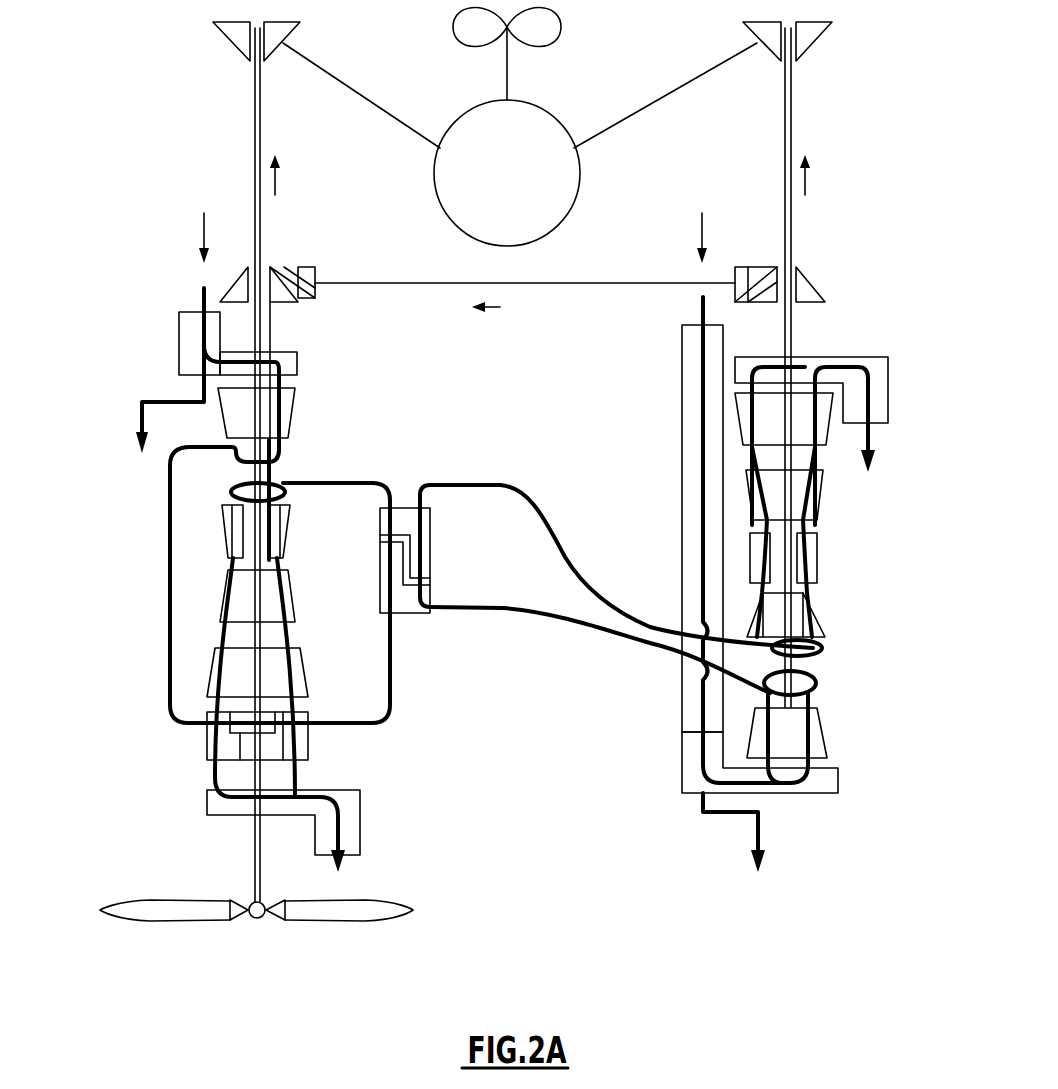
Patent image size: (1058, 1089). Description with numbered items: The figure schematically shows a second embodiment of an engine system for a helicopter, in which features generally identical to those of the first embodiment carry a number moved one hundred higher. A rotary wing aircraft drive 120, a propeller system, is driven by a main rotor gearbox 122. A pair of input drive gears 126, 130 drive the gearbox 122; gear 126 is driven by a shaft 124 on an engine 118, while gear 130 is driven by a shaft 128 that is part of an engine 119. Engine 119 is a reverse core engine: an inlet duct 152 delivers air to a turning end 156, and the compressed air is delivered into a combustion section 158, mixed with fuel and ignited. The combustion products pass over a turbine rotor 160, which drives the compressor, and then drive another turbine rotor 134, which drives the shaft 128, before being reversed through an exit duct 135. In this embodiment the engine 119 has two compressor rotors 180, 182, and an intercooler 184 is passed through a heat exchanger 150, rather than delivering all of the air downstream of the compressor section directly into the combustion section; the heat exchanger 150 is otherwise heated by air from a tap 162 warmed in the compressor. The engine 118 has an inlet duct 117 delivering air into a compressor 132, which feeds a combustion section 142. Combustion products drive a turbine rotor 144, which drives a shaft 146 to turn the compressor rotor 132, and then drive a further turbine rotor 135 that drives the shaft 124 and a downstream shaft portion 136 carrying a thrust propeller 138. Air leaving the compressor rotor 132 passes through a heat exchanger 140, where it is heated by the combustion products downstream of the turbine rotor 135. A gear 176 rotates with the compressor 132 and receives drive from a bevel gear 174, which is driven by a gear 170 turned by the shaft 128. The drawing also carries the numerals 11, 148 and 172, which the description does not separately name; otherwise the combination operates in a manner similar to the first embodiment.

The recuperator/heat exchanger 11 is at (820, 650).
The inlet duct 117 is at (187, 348).
The engine 118 is at (113, 312).
The engine 119 is at (884, 226).
The rotary wing aircraft drive 120 is at (468, 26).
The main rotor gearbox 122 is at (548, 112).
The shaft 124 is at (255, 82).
The input drive gear 126 is at (228, 40).
The shaft 128 is at (792, 125).
The input drive gear 130 is at (806, 36).
The compressor 132 is at (233, 412).
The turbine rotor 134 is at (830, 426).
The turbine rotor 135 is at (298, 670).
The downstream shaft portion 136 is at (254, 832).
The thrust propeller 138 is at (143, 912).
The heat exchanger 140 is at (207, 742).
The combustion section 142 is at (290, 538).
The turbine rotor 144 is at (296, 606).
The shaft 146 is at (268, 472).
The exhaust duct 148 is at (353, 810).
The heat exchanger 150 is at (412, 616).
The inlet duct 152 is at (682, 350).
The turning end 156 is at (690, 780).
The combustion section 158 is at (815, 572).
The turbine rotor 160 is at (818, 492).
The tap 162 is at (650, 643).
The gear 170 is at (818, 278).
The interconnect shaft 172 is at (572, 282).
The bevel gear 174 is at (302, 262).
The gear 176 is at (283, 303).
The compressor rotor 180 is at (818, 608).
The compressor rotor 182 is at (828, 738).
The intercooler 184 is at (580, 627).